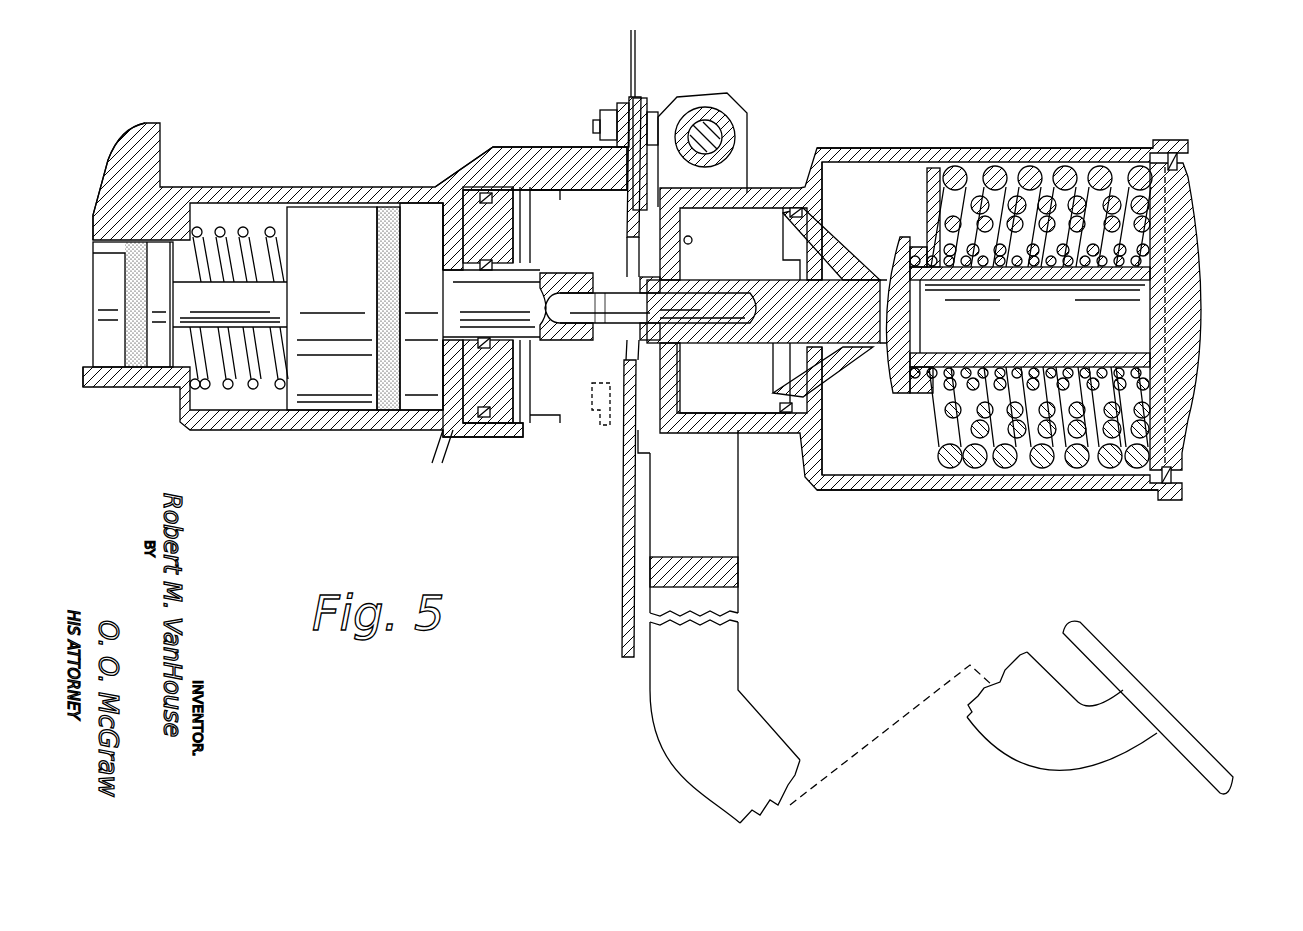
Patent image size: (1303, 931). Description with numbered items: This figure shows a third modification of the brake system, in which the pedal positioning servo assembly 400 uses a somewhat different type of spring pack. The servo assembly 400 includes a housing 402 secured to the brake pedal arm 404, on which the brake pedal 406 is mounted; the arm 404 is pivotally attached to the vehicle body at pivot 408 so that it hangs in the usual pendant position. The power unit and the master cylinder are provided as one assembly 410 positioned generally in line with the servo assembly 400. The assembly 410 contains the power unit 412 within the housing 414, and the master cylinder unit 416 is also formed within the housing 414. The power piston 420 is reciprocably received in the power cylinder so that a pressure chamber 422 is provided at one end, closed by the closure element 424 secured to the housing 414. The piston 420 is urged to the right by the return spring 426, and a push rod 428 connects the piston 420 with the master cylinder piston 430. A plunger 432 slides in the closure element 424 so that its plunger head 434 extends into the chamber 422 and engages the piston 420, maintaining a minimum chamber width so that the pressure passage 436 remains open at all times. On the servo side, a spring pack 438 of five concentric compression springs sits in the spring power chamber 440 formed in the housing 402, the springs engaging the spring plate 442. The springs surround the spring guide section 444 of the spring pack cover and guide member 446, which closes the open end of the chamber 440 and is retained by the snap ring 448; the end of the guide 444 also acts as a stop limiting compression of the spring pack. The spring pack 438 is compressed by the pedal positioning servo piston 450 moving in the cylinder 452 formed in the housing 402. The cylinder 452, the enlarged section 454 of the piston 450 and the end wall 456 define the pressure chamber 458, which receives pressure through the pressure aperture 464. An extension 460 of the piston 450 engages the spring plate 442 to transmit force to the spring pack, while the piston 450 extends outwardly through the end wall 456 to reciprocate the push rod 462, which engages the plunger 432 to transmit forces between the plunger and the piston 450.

The pedal positioning servo assembly 400 is at (877, 147).
The housing 402 is at (960, 150).
The brake pedal arm 404 is at (732, 530).
The brake pedal 406 is at (1120, 660).
The pivot 408 is at (705, 130).
The power unit and master cylinder assembly 410 is at (265, 185).
The power unit 412 is at (383, 430).
The housing 414 is at (313, 420).
The master cylinder unit 416 is at (215, 208).
The power piston 420 is at (347, 208).
The pressure chamber 422 is at (452, 188).
The closure element 424 is at (505, 222).
The return spring 426 is at (232, 390).
The push rod 428 is at (277, 290).
The master cylinder piston 430 is at (163, 250).
The plunger 432 is at (563, 338).
The plunger head 434 is at (455, 288).
The pressure passage 436 is at (447, 457).
The spring pack 438 is at (1160, 262).
The spring power chamber 440 is at (888, 443).
The spring plate 442 is at (933, 200).
The spring guide section 444 is at (1065, 357).
The spring pack cover and guide member 446 is at (1190, 350).
The snap ring 448 is at (1173, 478).
The pedal positioning servo piston 450 is at (755, 287).
The cylinder 452 is at (745, 413).
The enlarged section 454 is at (817, 377).
The end wall 456 is at (672, 388).
The pressure chamber 458 is at (758, 371).
The extension 460 is at (863, 303).
The push rod 462 is at (607, 302).
The pressure aperture 464 is at (692, 240).